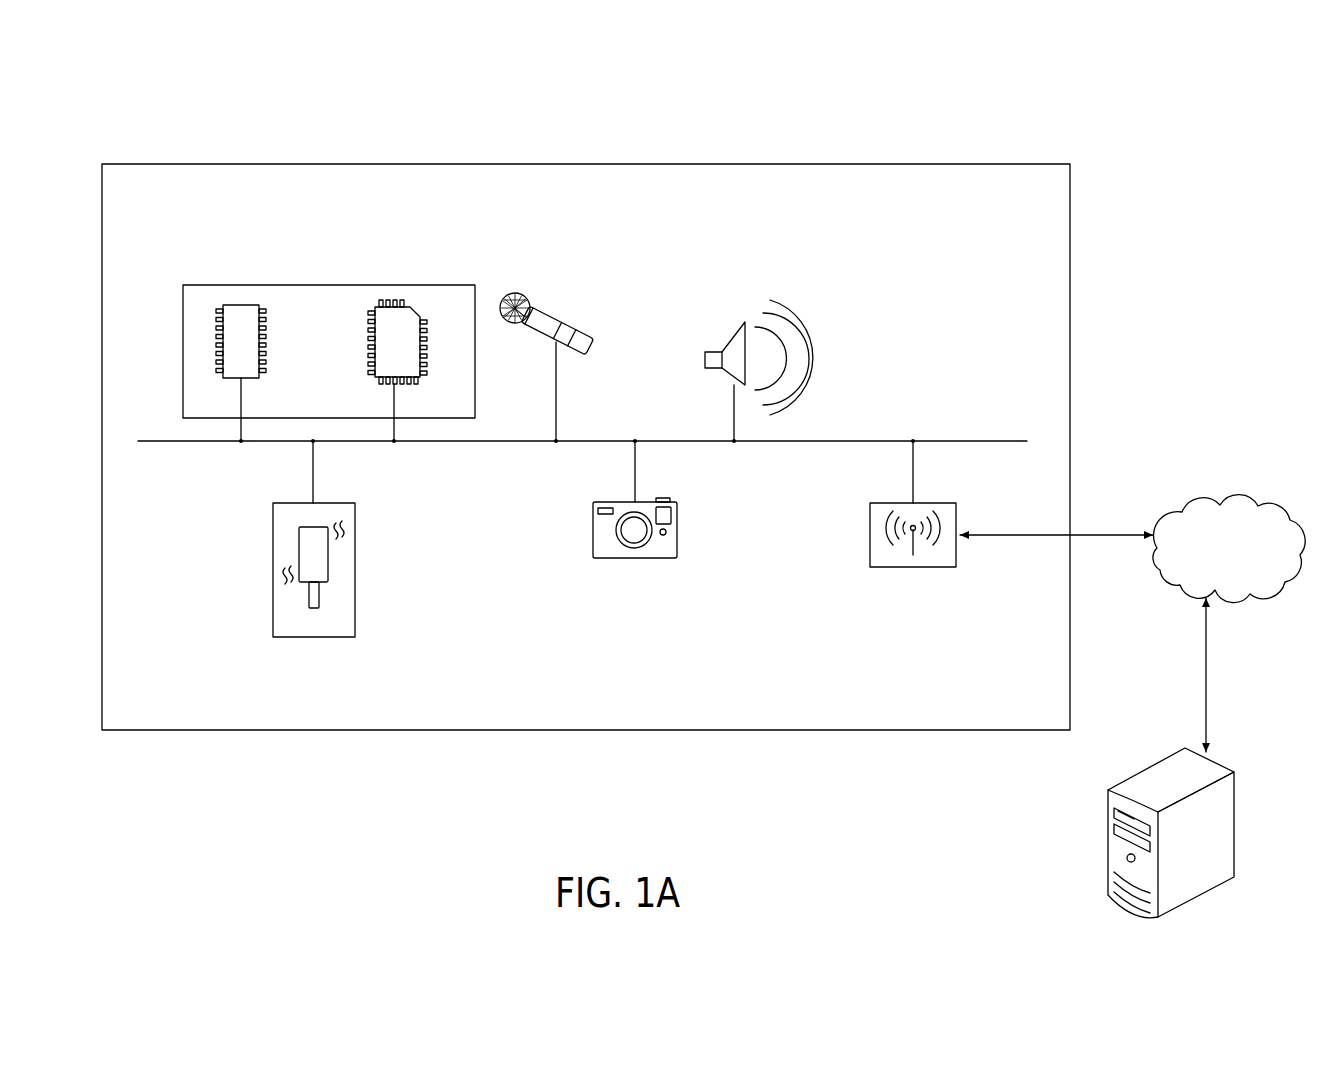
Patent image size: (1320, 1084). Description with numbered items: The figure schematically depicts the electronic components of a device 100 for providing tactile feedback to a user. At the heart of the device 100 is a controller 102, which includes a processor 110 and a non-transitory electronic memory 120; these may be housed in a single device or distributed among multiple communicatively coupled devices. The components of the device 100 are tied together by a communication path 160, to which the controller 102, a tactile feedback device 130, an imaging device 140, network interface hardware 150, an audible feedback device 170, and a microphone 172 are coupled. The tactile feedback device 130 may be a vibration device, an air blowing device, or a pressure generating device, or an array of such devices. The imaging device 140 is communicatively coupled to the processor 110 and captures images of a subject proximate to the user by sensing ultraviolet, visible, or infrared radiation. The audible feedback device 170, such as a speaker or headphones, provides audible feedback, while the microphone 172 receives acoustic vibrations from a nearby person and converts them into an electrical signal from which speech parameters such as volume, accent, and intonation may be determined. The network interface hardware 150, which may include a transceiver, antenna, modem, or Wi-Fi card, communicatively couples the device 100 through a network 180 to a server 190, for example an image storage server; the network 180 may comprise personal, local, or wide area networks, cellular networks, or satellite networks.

The device 100 is at (1160, 149).
The controller 102 is at (322, 284).
The processor 110 is at (240, 305).
The non-transitory electronic memory 120 is at (410, 306).
The tactile feedback device 130 is at (312, 638).
The imaging device 140 is at (635, 559).
The network interface hardware 150 is at (920, 568).
The communication path 160 is at (868, 440).
The audible feedback device 170 is at (748, 322).
The microphone 172 is at (558, 314).
The network 180 is at (1240, 498).
The server 190 is at (1236, 791).